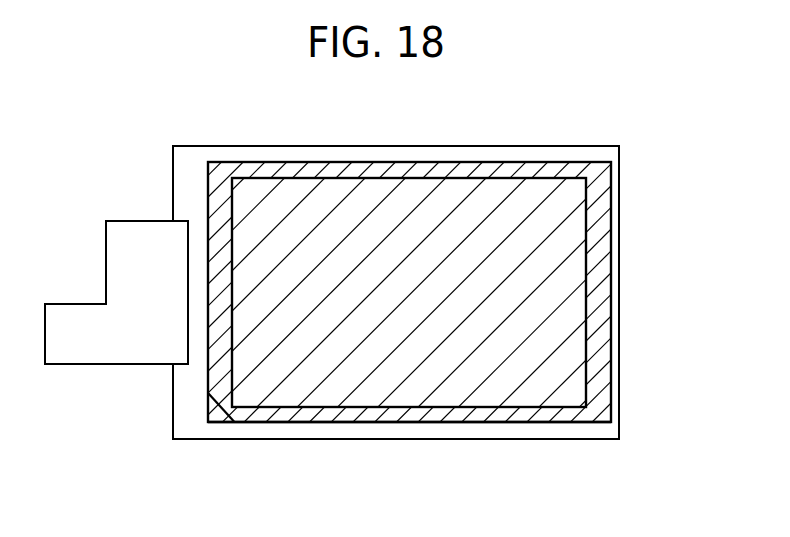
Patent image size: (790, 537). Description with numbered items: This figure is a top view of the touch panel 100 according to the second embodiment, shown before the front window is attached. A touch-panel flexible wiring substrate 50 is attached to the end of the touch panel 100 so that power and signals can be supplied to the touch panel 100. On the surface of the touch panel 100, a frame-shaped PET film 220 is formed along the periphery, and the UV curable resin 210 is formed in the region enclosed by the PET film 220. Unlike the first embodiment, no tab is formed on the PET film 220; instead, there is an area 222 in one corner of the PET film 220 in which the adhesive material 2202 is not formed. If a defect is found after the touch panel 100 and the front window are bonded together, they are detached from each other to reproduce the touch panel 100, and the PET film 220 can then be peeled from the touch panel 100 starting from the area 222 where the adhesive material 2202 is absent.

The touch panel 100 is at (619, 211).
The touch-panel flexible wiring substrate 50 is at (127, 250).
The UV curable resin 210 is at (540, 301).
The PET film 220 is at (611, 348).
The area in which the adhesive material is not formed 222 is at (218, 413).
The adhesive material 2202 is at (312, 423).